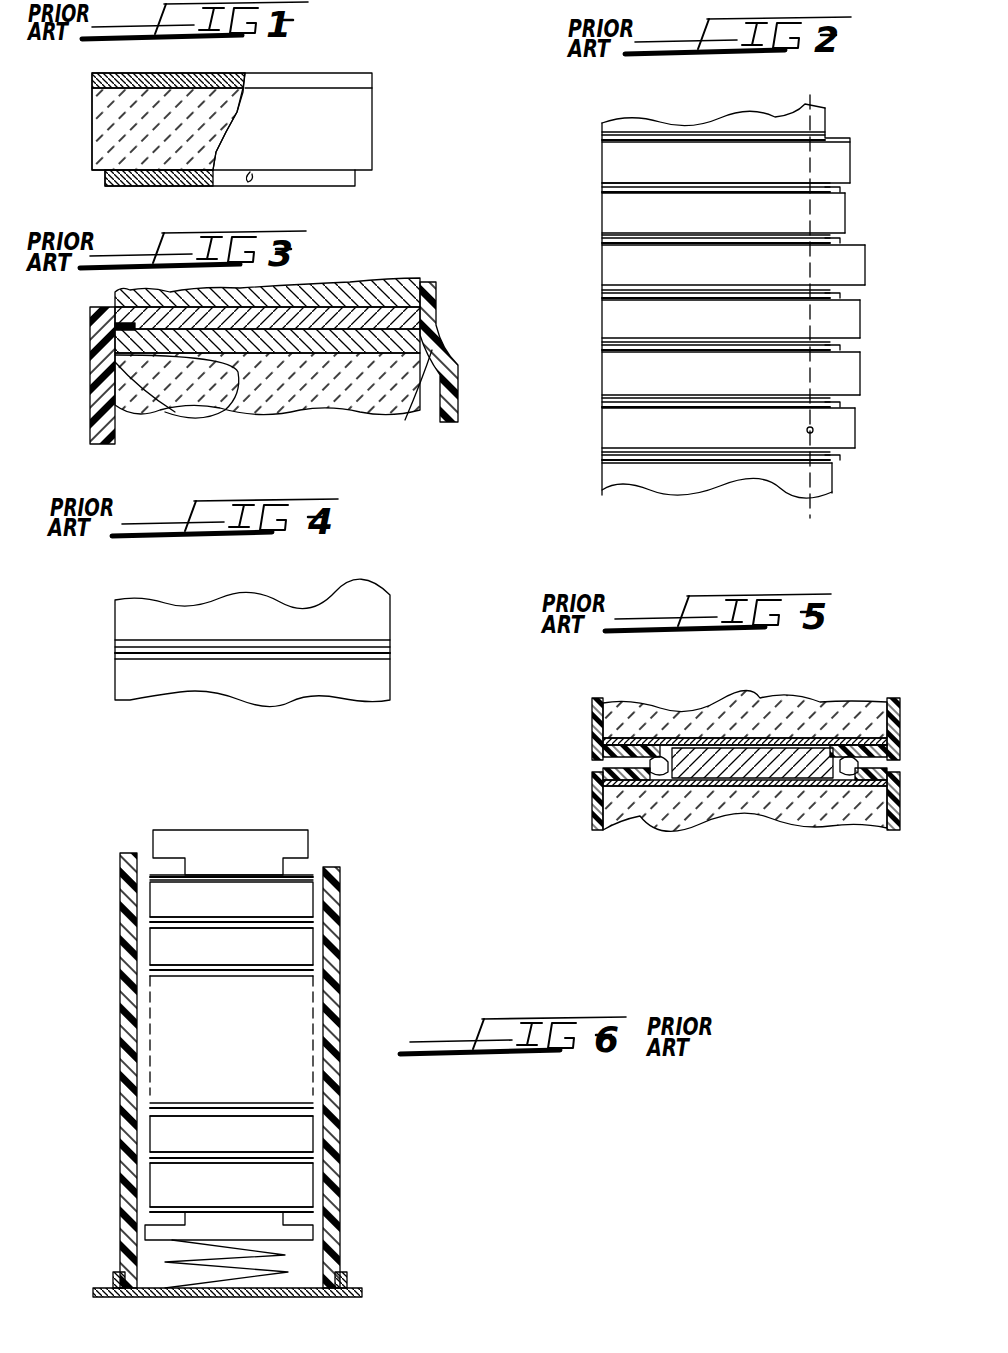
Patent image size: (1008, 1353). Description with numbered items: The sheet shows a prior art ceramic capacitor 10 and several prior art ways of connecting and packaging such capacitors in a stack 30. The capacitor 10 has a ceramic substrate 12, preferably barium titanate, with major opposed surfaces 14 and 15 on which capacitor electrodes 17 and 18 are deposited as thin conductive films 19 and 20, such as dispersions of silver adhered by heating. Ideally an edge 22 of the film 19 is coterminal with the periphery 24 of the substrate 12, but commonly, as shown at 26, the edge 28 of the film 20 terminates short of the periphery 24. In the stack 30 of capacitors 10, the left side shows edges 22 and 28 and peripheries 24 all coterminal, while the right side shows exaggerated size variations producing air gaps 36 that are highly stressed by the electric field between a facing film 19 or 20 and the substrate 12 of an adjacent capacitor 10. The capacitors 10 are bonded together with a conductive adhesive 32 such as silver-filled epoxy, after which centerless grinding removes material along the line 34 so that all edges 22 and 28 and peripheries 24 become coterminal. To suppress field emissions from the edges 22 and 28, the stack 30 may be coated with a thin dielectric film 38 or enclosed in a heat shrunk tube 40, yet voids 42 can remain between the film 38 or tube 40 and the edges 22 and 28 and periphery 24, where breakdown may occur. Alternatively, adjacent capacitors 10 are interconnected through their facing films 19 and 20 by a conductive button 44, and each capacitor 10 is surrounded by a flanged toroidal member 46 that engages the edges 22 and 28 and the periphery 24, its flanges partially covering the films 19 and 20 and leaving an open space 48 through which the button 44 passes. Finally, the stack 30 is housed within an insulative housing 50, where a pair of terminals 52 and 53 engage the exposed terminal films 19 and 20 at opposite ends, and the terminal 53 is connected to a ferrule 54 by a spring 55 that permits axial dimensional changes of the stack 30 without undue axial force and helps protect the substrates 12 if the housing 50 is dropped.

In FIG. 1, the ceramic capacitor 10 is at (379, 106).
In FIG. 2, the ceramic capacitor 10 is at (863, 166).
In FIG. 3, the ceramic capacitor 10 is at (400, 272).
In FIG. 4, the ceramic capacitor 10 is at (250, 600).
In FIG. 5, the ceramic capacitor 10 is at (667, 705).
In FIG. 6, the ceramic capacitor 10 is at (318, 895).
In FIG. 1, the ceramic substrate 12 is at (357, 128).
In FIG. 2, the ceramic substrate 12 is at (602, 124).
In FIG. 3, the ceramic substrate 12 is at (340, 285).
In FIG. 4, the ceramic substrate 12 is at (185, 630).
In FIG. 5, the ceramic substrate 12 is at (735, 700).
In FIG. 6, the ceramic substrate 12 is at (302, 907).
In FIG. 1, the major opposed surface 14 is at (282, 80).
In FIG. 1, the major opposed surface 15 is at (252, 172).
In FIG. 1, the capacitor electrode 17 is at (292, 72).
In FIG. 1, the capacitor electrode 18 is at (220, 188).
In FIG. 1, the film 19 is at (320, 82).
In FIG. 2, the film 19 is at (602, 141).
In FIG. 3, the film 19 is at (226, 350).
In FIG. 4, the film 19 is at (115, 660).
In FIG. 5, the film 19 is at (840, 800).
In FIG. 6, the film 19 is at (300, 877).
In FIG. 1, the film 20 is at (280, 178).
In FIG. 2, the film 20 is at (602, 133).
In FIG. 3, the film 20 is at (440, 322).
In FIG. 4, the film 20 is at (115, 642).
In FIG. 5, the film 20 is at (840, 740).
In FIG. 6, the film 20 is at (182, 968).
In FIG. 1, the edge of film 19 22 is at (92, 76).
In FIG. 3, the edge of film 19 22 is at (118, 328).
In FIG. 5, the edge of film 19 22 is at (600, 784).
In FIG. 1, the periphery of substrate 24 is at (88, 92).
In FIG. 1, the non-coterminal condition 26 is at (100, 184).
In FIG. 1, the edge of film 20 28 is at (105, 190).
In FIG. 5, the edge of film 20 28 is at (601, 743).
In FIG. 2, the stack of capacitors 30 is at (868, 120).
In FIG. 3, the stack of capacitors 30 is at (272, 428).
In FIG. 4, the stack of capacitors 30 is at (356, 568).
In FIG. 5, the stack of capacitors 30 is at (700, 834).
In FIG. 6, the stack of capacitors 30 is at (342, 1038).
In FIG. 4, the conductive adhesive 32 is at (115, 652).
In FIG. 2, the grinding line 34 is at (814, 430).
In FIG. 2, the air gap 36 is at (842, 190).
In FIG. 3, the dielectric coating 38 is at (118, 440).
In FIG. 3, the heat shrunk tube 40 is at (460, 394).
In FIG. 3, the void 42 is at (140, 395).
In FIG. 5, the conductive button 44 is at (783, 748).
In FIG. 5, the flanged toroidal member 46 is at (597, 712).
In FIG. 5, the open space 48 is at (600, 762).
In FIG. 6, the insulative housing 50 is at (342, 1094).
In FIG. 6, the terminal 52 is at (240, 835).
In FIG. 6, the terminal 53 is at (292, 1230).
In FIG. 6, the ferrule 54 is at (298, 1298).
In FIG. 6, the spring 55 is at (270, 1270).